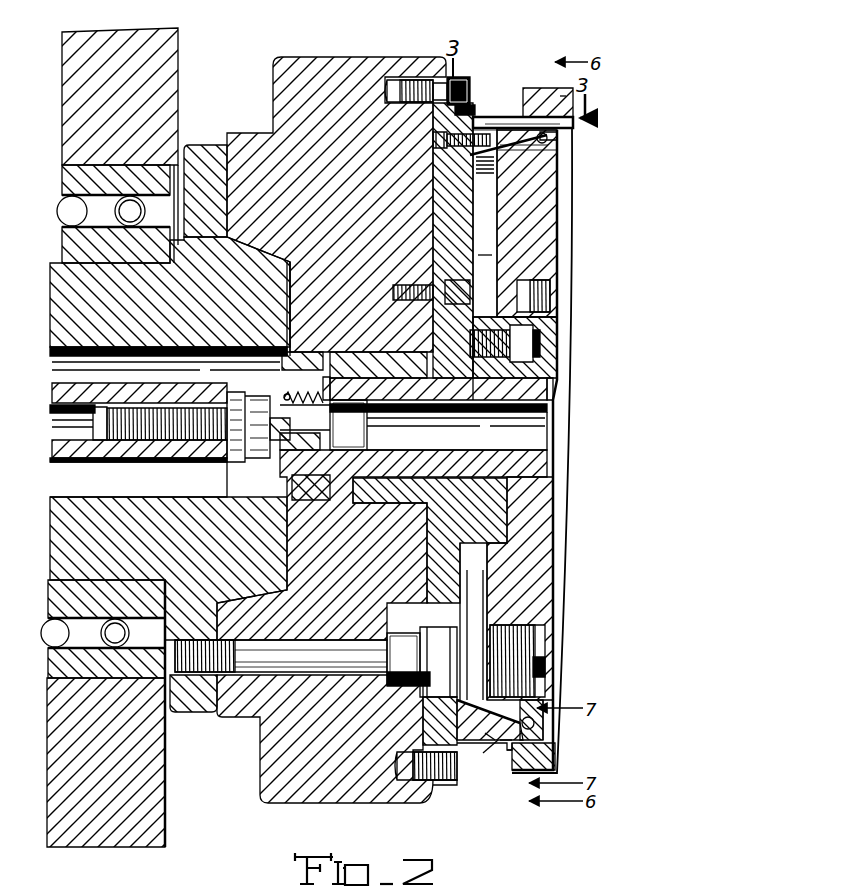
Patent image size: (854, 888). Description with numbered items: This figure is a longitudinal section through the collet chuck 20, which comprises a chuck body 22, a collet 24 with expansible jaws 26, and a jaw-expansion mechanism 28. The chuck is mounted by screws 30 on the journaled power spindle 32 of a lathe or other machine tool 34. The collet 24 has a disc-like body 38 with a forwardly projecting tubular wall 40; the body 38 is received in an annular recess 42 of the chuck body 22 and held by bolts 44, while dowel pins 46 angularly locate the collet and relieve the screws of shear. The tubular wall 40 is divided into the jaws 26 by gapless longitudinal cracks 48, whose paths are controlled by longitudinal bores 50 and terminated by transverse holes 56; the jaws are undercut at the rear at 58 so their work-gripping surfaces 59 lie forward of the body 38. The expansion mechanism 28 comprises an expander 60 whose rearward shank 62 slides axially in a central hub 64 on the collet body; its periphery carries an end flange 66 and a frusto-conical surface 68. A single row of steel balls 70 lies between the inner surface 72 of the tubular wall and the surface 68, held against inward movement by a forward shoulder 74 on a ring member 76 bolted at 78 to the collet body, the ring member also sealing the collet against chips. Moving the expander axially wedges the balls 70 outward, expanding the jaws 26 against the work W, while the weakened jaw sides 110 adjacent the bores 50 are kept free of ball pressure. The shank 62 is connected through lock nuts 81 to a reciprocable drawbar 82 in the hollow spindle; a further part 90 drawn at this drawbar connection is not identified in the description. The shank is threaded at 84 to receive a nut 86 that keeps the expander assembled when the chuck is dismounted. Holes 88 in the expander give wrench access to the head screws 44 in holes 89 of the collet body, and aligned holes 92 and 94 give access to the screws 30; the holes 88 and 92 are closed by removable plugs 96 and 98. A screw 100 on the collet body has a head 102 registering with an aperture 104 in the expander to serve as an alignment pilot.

The collet chuck 20 is at (513, 33).
The chuck body 22 is at (339, 55).
The collet 24 is at (499, 112).
The expansible jaws 26 is at (518, 110).
The jaw-expansion mechanism 28 is at (560, 386).
The screws 30 is at (302, 659).
The power spindle 32 is at (200, 160).
The machine tool 34 is at (181, 88).
The collet body 38 is at (458, 205).
The tubular wall 40 is at (505, 748).
The annular recess 42 is at (400, 782).
The bolts 44 is at (469, 86).
The dowel pins 46 is at (443, 776).
The longitudinal cracks 48 is at (540, 108).
The longitudinal bores 50 is at (560, 130).
The transverse holes 56 is at (469, 118).
The undercut 58 is at (470, 106).
The work-gripping surfaces 59 is at (504, 776).
The expander 60 is at (540, 245).
The shank 62 is at (500, 470).
The central hub 64 is at (345, 495).
The end flange 66 is at (535, 724).
The frusto-conical surface 68 is at (548, 140).
The steel balls 70 is at (563, 142).
The inner surface 72 is at (495, 742).
The forward shoulder 74 is at (521, 776).
The ring member 76 is at (530, 147).
The bolts 78 is at (520, 150).
The lock nuts 81 is at (250, 462).
The drawbar 82 is at (133, 452).
The threaded portion 84 is at (280, 471).
The nut 86 is at (302, 373).
The holes 88 is at (540, 270).
The holes 89 is at (468, 264).
The piston head 90 is at (323, 425).
The holes 92 is at (483, 625).
The holes 94 is at (448, 679).
The plugs 96 is at (552, 296).
The plugs 98 is at (536, 643).
The screw 100 is at (490, 330).
The head 102 is at (540, 335).
The aperture 104 is at (534, 350).
The jaw sides 110 is at (563, 96).
The work W is at (566, 761).